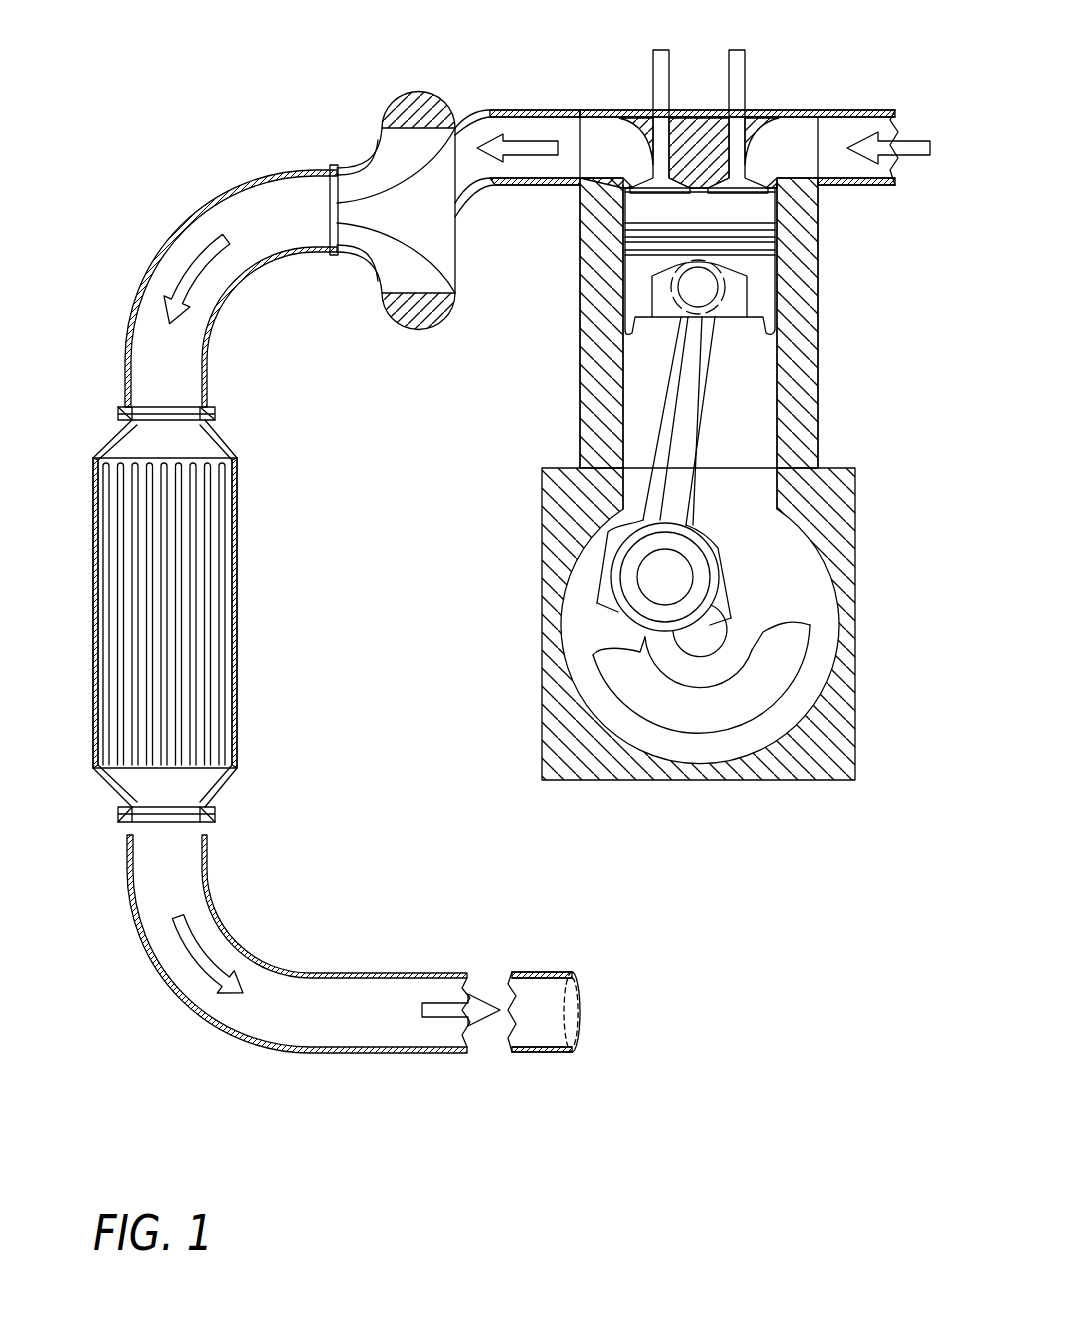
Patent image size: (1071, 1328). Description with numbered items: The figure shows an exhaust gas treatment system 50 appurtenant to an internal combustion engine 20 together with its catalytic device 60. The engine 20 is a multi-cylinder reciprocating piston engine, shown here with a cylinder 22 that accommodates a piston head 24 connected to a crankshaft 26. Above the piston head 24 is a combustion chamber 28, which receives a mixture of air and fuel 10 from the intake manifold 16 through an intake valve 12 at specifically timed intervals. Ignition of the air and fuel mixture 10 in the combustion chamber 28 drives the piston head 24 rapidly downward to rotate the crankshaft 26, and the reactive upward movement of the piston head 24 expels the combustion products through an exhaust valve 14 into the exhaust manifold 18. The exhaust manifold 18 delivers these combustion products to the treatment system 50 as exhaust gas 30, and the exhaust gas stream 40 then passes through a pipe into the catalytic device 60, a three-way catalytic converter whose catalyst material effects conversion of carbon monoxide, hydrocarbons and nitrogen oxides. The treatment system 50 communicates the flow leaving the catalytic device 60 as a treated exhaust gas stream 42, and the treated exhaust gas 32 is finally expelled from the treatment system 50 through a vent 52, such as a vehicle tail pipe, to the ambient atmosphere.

The mixture of air and fuel 10 is at (893, 140).
The intake valve 12 is at (741, 162).
The exhaust valve 14 is at (657, 168).
The intake manifold 16 is at (860, 110).
The exhaust manifold 18 is at (561, 111).
The internal combustion engine 20 is at (818, 297).
The cylinder 22 is at (777, 390).
The piston head 24 is at (635, 297).
The crankshaft 26 is at (665, 577).
The combustion chamber 28 is at (777, 199).
The exhaust gas 30 is at (527, 137).
The treated exhaust gas 32 is at (437, 1020).
The exhaust gas stream 40 is at (190, 280).
The treated exhaust gas stream 42 is at (195, 955).
The exhaust gas treatment system 50 is at (166, 180).
The vent 52 is at (582, 1010).
The catalytic device 60 is at (92, 570).